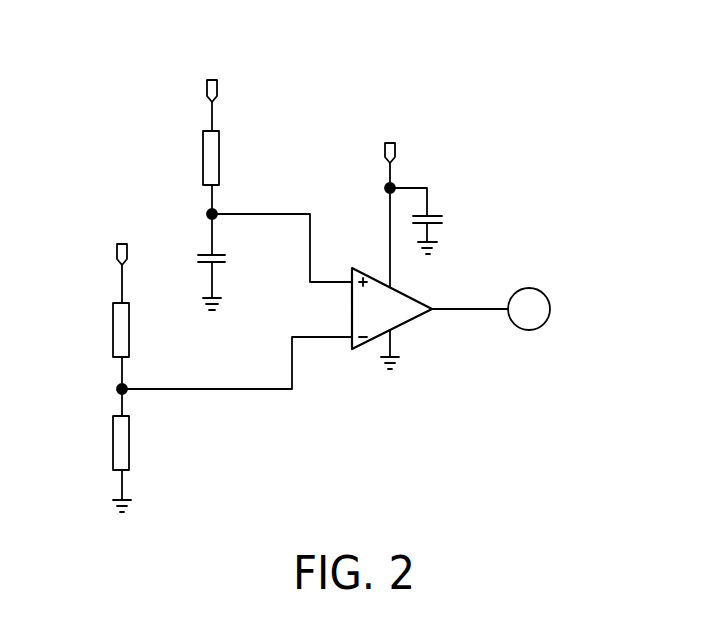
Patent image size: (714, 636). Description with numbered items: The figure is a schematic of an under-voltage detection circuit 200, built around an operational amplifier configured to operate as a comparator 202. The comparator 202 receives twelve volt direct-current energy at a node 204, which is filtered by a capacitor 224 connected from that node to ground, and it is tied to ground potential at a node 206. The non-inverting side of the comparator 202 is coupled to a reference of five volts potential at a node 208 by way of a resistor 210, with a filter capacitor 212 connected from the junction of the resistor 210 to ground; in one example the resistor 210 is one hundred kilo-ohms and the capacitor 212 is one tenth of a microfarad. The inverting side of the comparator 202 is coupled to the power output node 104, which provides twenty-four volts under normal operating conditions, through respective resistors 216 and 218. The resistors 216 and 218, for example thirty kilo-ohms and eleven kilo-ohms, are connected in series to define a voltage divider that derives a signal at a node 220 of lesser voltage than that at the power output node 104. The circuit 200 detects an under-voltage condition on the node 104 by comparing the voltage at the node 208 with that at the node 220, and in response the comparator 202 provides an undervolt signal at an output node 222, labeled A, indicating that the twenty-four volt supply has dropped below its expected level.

The under-voltage detection circuit 200 is at (485, 59).
The comparator 202 is at (430, 272).
The node 204 is at (395, 148).
The node 206 is at (209, 313).
The node 208 is at (207, 92).
The resistor 210 is at (203, 155).
The filter capacitor 212 is at (219, 263).
The resistor 216 is at (113, 327).
The resistor 218 is at (113, 445).
The node 220 is at (187, 390).
The node 222 is at (541, 325).
The capacitor 224 is at (432, 215).
The power output node 104 is at (117, 255).